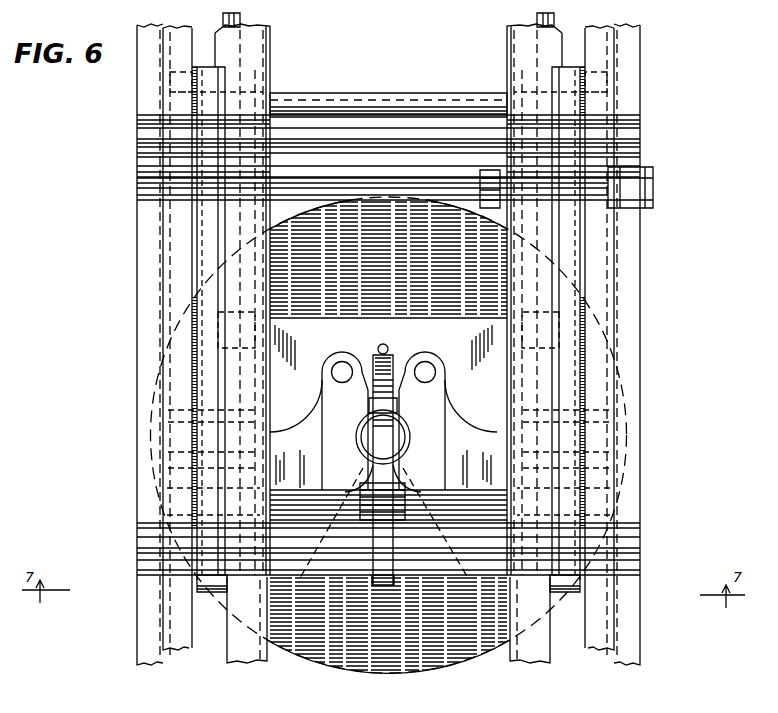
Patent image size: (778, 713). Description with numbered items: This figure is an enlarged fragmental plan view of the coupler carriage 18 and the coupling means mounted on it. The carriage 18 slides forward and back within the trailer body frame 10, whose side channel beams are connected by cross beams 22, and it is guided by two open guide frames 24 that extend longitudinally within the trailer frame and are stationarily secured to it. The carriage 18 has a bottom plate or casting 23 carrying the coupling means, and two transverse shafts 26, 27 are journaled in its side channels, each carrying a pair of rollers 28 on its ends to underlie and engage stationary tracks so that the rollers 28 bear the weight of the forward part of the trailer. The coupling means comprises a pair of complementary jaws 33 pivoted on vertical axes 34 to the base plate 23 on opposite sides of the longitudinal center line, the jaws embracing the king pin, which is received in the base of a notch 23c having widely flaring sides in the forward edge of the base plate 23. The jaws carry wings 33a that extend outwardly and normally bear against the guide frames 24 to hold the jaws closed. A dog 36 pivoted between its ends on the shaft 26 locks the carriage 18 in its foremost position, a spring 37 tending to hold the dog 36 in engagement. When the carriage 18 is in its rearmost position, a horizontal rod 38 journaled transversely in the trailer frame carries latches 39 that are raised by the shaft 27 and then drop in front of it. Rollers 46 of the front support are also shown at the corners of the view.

The body frame 10 is at (140, 612).
The coupler carriage 18 is at (213, 596).
The cross beams 22 is at (148, 141).
The bottom plate or casting 23 is at (409, 327).
The notch 23c is at (390, 541).
The guide frames 24 is at (250, 648).
The shaft 26 is at (295, 523).
The shaft 27 is at (337, 93).
The rollers 28 is at (585, 72).
The complementary jaws 33 is at (335, 398).
The wings 33a is at (280, 430).
The vertical axes 34 is at (342, 366).
The dog 36 is at (397, 588).
The spring 37 is at (377, 362).
The horizontal rod 38 is at (409, 190).
The latches 39 is at (492, 208).
The rollers 46 is at (242, 17).